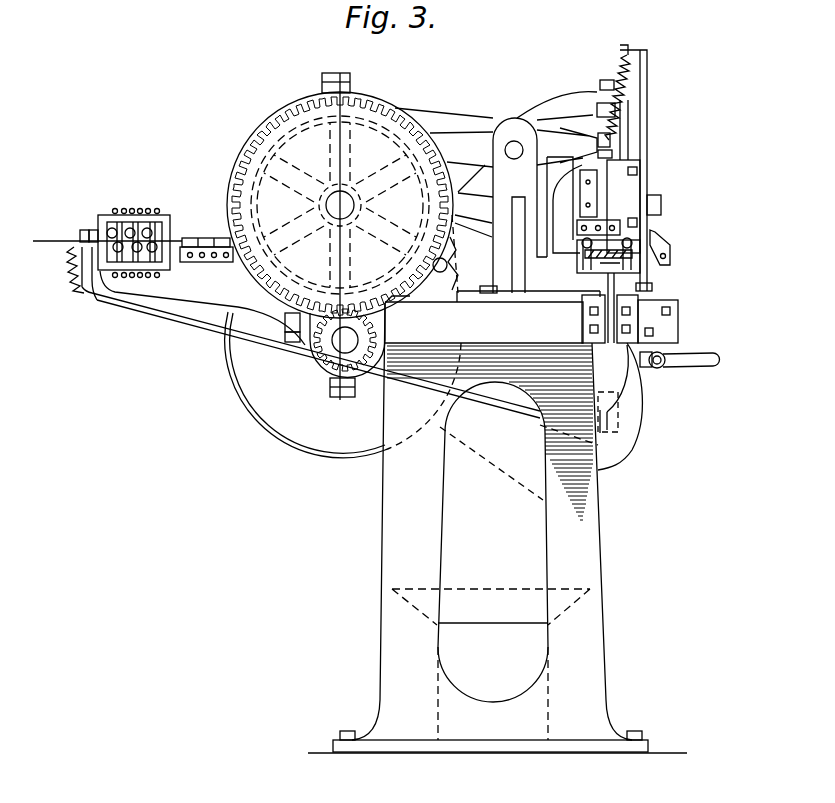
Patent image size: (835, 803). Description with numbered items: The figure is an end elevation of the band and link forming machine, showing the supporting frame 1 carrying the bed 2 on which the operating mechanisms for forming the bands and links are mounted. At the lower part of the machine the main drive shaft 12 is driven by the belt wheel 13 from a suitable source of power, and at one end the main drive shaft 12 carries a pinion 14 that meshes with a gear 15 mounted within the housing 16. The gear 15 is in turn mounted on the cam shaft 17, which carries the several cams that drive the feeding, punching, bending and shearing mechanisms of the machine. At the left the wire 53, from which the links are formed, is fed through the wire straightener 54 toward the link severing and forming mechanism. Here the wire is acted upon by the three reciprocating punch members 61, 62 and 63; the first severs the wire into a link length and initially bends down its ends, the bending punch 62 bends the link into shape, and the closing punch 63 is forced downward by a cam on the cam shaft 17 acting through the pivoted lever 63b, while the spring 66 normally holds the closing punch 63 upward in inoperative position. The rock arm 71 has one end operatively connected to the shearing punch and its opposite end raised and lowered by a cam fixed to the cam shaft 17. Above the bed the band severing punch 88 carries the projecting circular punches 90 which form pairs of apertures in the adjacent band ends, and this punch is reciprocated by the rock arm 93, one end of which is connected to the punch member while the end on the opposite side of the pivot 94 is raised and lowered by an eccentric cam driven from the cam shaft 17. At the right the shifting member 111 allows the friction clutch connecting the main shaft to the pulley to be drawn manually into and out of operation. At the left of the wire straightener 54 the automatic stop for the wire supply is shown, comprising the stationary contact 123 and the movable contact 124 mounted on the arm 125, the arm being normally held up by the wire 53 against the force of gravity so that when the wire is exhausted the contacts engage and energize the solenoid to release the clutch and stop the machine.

The supporting frame 1 is at (590, 548).
The bed 2 is at (531, 308).
The main drive shaft 12 is at (324, 353).
The belt wheel 13 is at (253, 425).
The pinion 14 is at (386, 333).
The gear 15 is at (401, 308).
The housing 16 is at (263, 124).
The cam shaft 17 is at (322, 197).
The wire 53 is at (45, 243).
The wire straightener 54 is at (172, 225).
The punch member 61 is at (632, 120).
The bending punch 62 is at (620, 140).
The closing punch 63 is at (620, 150).
The pivoted lever 63b is at (453, 113).
The spring 66 is at (615, 77).
The rock arm 71 is at (557, 107).
The punch 88 is at (606, 198).
The projecting circular punches 90 is at (620, 236).
The rock arm 93 is at (513, 209).
The pivot 94 is at (509, 160).
The shifting member 111 is at (680, 349).
The stationary contact 123 is at (68, 268).
The movable contact 124 is at (82, 243).
The arm 125 is at (92, 222).